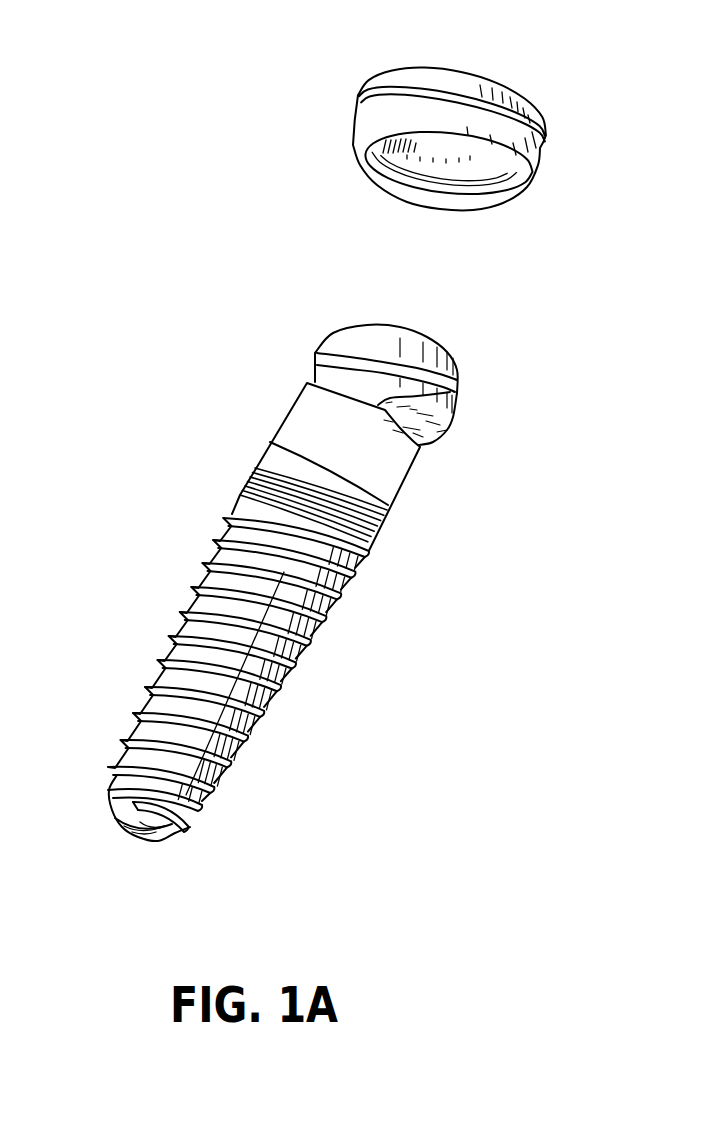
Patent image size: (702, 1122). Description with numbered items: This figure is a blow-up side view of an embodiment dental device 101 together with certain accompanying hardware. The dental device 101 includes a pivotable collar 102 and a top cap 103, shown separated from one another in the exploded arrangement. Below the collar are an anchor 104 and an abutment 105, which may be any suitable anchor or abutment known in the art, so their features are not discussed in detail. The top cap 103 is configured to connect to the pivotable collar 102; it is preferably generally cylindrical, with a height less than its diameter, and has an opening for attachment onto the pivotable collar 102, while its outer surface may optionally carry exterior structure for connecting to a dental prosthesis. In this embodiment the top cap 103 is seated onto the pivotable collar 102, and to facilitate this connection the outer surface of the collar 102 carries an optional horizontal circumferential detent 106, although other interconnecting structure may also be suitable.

The dental device 101 is at (313, 423).
The pivotable collar 102 is at (317, 357).
The top cap 103 is at (365, 91).
The anchor 104 is at (145, 690).
The abutment 105 is at (275, 422).
The horizontal circumferential detent 106 is at (458, 393).